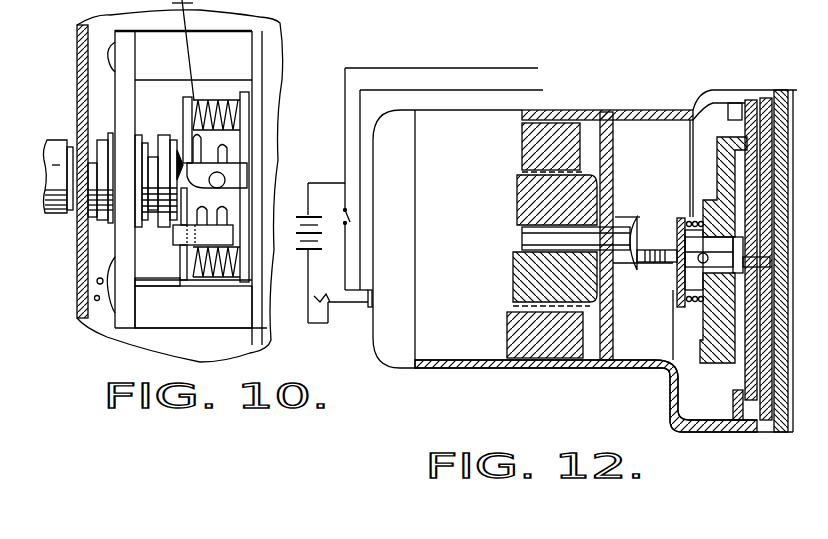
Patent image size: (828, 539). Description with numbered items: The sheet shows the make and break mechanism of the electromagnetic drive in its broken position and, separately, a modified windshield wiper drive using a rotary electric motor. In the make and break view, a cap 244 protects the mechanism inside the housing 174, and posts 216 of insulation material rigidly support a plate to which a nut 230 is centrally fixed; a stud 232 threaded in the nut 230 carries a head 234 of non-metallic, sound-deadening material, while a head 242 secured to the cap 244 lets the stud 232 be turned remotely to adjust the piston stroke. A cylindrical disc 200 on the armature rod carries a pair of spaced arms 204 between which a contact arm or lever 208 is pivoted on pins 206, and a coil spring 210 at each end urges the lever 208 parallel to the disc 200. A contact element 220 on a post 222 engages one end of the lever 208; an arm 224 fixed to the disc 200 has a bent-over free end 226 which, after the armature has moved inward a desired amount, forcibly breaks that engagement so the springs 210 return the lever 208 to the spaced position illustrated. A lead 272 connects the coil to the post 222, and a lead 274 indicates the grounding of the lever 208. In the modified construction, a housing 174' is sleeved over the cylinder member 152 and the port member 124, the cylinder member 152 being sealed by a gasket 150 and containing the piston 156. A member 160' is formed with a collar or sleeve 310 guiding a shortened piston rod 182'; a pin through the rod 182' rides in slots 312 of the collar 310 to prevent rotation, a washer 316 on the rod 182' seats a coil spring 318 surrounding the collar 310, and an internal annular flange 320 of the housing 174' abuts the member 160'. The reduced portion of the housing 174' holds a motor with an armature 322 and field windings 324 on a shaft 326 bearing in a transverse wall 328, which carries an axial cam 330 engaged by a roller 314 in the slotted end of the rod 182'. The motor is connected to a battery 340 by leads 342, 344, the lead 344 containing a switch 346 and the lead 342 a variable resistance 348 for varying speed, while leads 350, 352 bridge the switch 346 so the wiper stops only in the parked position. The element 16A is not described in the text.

In FIG. 10, the housing 174 is at (198, 186).
In FIG. 10, the cap 244 is at (86, 62).
In FIG. 10, the posts 216 is at (172, 65).
In FIG. 10, the lead 274 is at (186, 14).
In FIG. 10, the cylindrical disc 200 is at (250, 101).
In FIG. 10, the contact arm or lever 208 is at (182, 114).
In FIG. 10, the coil spring 210 is at (216, 97).
In FIG. 10, the head or disc 234 is at (224, 148).
In FIG. 10, the spaced arms 204 is at (238, 177).
In FIG. 10, the pins 206 is at (222, 182).
In FIG. 10, the bent-over free end 226 is at (173, 232).
In FIG. 10, the arm 224 is at (230, 240).
In FIG. 10, the post 222 is at (178, 280).
In FIG. 10, the contact element 220 is at (193, 307).
In FIG. 10, the head 242 is at (52, 140).
In FIG. 10, the stud 232 is at (76, 214).
In FIG. 10, the nut 230 is at (100, 225).
In FIG. 10, the lead 272 is at (92, 290).
In FIG. 12, the battery 340 is at (306, 216).
In FIG. 12, the variable resistance 348 is at (320, 295).
In FIG. 12, the lead 342 is at (348, 308).
In FIG. 12, the lead 352 is at (345, 108).
In FIG. 12, the lead 350 is at (360, 157).
In FIG. 12, the switch 346 is at (347, 216).
In FIG. 12, the lead 344 is at (345, 262).
In FIG. 12, the housing 174' is at (585, 259).
In FIG. 12, the gasket 150 is at (786, 92).
In FIG. 12, the member 160' is at (762, 238).
In FIG. 12, the piston 156 is at (767, 330).
In FIG. 12, the block 16A is at (730, 118).
In FIG. 12, the internal annular flange 320 is at (735, 100).
In FIG. 12, the cylinder member 152 is at (765, 418).
In FIG. 12, the port member 124 is at (780, 415).
In FIG. 12, the field windings 324 is at (522, 134).
In FIG. 12, the armature 322 is at (518, 212).
In FIG. 12, the shaft 326 is at (518, 240).
In FIG. 12, the transverse wall 328 is at (626, 148).
In FIG. 12, the washer 316 is at (682, 235).
In FIG. 12, the collar or sleeve 310 is at (698, 215).
In FIG. 12, the piston rod 182' is at (685, 318).
In FIG. 12, the axial cam 330 is at (626, 213).
In FIG. 12, the slots 312 is at (678, 280).
In FIG. 12, the coil spring 318 is at (693, 300).
In FIG. 12, the roller 314 is at (665, 248).